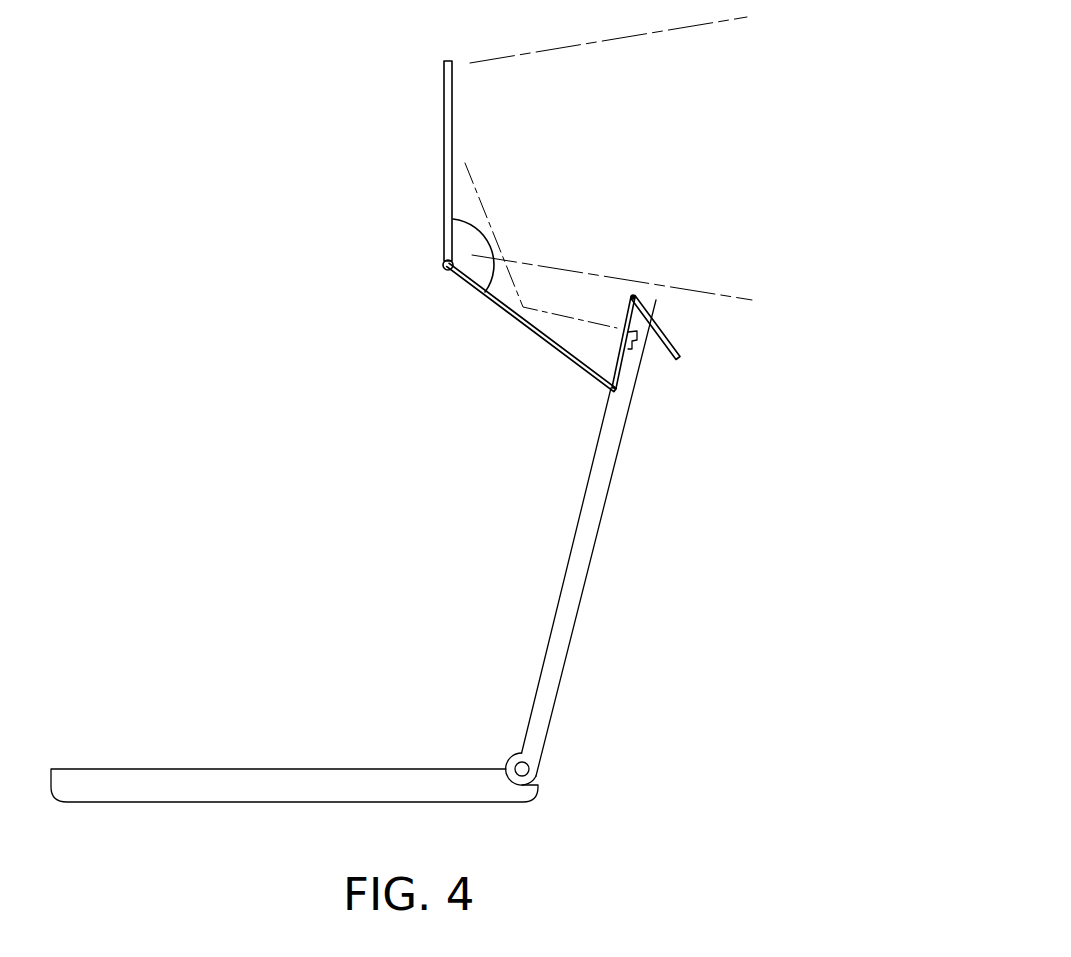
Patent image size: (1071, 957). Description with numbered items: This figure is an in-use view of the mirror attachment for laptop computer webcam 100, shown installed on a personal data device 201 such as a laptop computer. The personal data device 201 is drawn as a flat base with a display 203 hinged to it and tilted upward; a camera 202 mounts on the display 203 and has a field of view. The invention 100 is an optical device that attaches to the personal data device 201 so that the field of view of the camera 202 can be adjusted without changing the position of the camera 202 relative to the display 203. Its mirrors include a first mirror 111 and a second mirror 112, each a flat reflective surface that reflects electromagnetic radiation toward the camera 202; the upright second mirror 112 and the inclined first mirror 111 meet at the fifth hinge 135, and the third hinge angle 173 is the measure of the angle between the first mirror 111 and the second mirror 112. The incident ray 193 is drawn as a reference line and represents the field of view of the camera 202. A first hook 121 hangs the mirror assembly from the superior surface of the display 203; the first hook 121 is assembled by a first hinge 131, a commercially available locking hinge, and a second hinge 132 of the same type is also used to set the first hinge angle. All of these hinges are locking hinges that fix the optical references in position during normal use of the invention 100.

The mirror attachment for laptop computer webcam 100 is at (379, 159).
The second mirror 112 is at (444, 152).
The fifth hinge 135 is at (442, 267).
The first mirror 111 is at (488, 294).
The third hinge angle 173 is at (488, 232).
The incident ray 193 is at (547, 310).
The first hinge 131 is at (678, 316).
The second hinge 132 is at (614, 403).
The first hook 121 is at (665, 330).
The camera 202 is at (629, 347).
The display 203 is at (572, 466).
The personal data device 201 is at (360, 565).